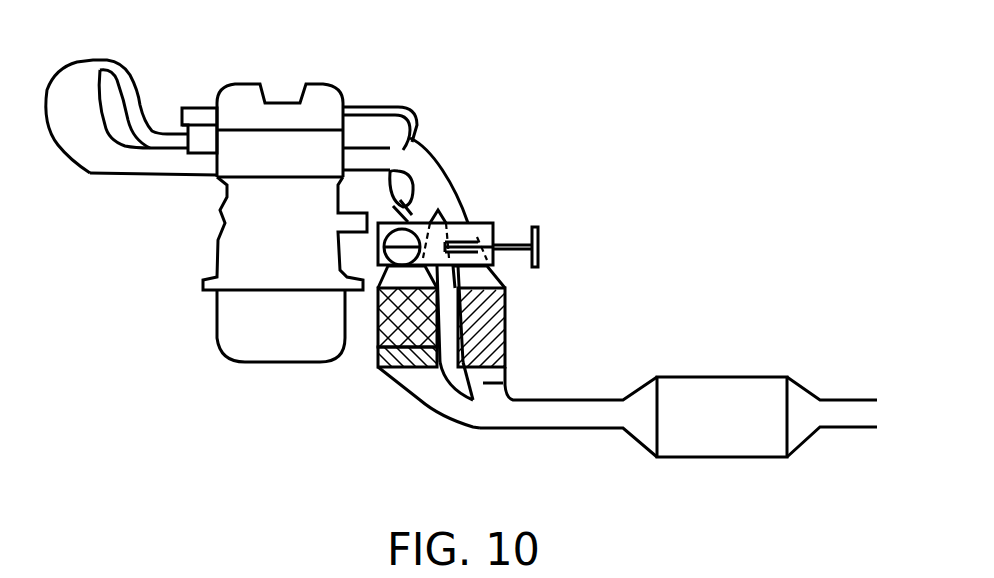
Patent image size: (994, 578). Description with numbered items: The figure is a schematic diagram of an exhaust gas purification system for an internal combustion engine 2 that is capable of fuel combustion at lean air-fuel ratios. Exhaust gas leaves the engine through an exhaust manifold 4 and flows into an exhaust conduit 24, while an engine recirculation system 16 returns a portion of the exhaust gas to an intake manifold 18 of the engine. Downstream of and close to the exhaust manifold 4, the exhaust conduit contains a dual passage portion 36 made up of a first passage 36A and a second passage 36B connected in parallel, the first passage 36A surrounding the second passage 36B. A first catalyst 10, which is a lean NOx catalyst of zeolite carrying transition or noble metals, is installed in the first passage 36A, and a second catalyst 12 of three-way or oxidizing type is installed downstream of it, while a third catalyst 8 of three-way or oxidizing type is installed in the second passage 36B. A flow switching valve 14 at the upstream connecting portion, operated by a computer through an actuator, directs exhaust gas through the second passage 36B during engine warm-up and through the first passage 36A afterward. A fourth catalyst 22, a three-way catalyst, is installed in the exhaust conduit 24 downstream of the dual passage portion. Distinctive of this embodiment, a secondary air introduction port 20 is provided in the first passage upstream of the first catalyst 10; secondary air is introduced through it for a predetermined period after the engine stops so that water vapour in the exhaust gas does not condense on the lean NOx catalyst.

The internal combustion engine 2 is at (317, 97).
The exhaust manifold 4 is at (372, 150).
The third catalyst 8 is at (497, 337).
The first catalyst 10 is at (395, 317).
The second catalyst 12 is at (413, 378).
The flow switching valve 14 is at (482, 223).
The engine recirculation system 16 is at (193, 110).
The intake manifold 18 is at (112, 160).
The secondary air introduction port 20 is at (391, 190).
The fourth catalyst 22 is at (703, 400).
The exhaust conduit 24 is at (571, 416).
The dual passage portion 36 is at (513, 290).
The first passage 36A is at (416, 401).
The second passage 36B is at (508, 380).